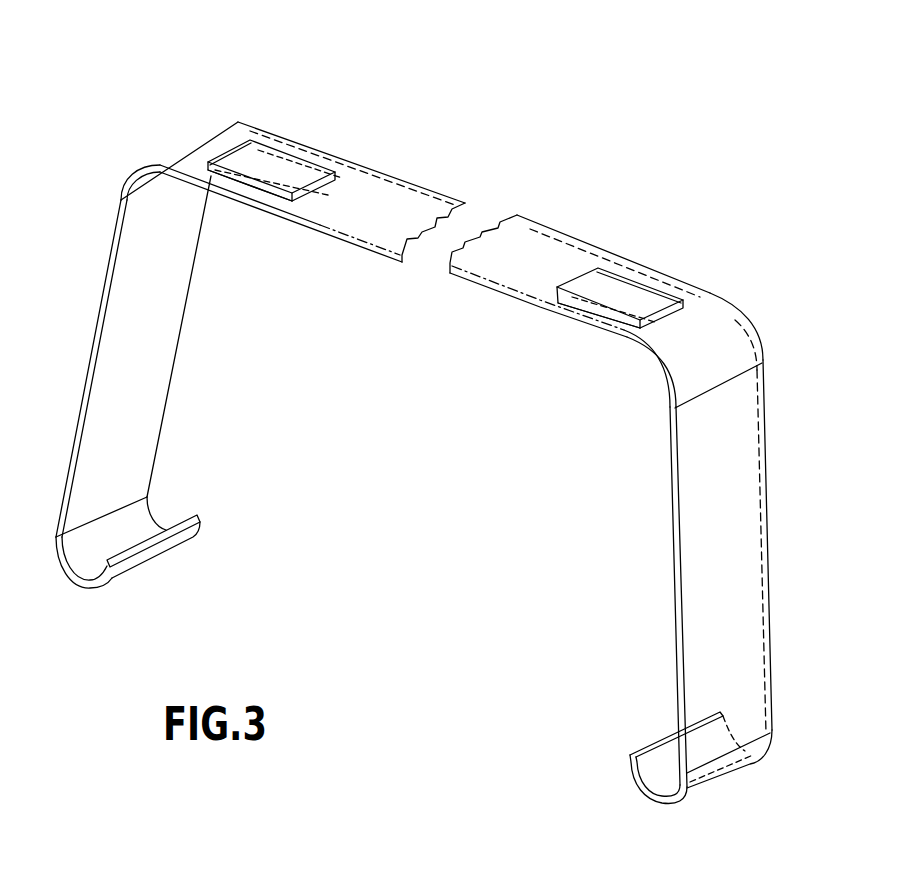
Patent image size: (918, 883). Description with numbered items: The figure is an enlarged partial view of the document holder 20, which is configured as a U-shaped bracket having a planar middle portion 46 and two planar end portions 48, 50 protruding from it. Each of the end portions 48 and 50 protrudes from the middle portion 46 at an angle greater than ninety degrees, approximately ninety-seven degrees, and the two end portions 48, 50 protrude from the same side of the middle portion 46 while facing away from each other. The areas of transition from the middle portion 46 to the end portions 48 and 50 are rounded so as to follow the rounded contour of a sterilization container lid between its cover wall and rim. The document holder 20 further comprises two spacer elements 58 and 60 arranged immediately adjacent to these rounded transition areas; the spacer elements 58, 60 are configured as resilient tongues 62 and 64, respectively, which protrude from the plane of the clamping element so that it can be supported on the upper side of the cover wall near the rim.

The document holder 20 is at (430, 86).
The middle portion 46 is at (390, 220).
The end portion 48 is at (740, 535).
The end portion 50 is at (160, 330).
The spacer element 58 is at (623, 302).
The spacer element 60 is at (268, 177).
The resilient tongue 62 is at (595, 295).
The resilient tongue 64 is at (285, 178).